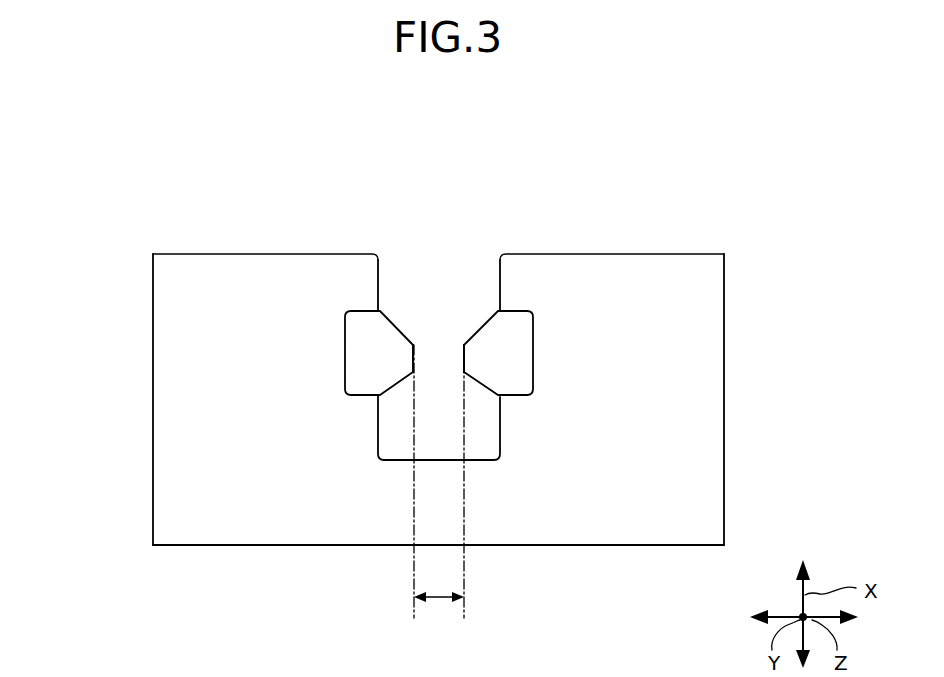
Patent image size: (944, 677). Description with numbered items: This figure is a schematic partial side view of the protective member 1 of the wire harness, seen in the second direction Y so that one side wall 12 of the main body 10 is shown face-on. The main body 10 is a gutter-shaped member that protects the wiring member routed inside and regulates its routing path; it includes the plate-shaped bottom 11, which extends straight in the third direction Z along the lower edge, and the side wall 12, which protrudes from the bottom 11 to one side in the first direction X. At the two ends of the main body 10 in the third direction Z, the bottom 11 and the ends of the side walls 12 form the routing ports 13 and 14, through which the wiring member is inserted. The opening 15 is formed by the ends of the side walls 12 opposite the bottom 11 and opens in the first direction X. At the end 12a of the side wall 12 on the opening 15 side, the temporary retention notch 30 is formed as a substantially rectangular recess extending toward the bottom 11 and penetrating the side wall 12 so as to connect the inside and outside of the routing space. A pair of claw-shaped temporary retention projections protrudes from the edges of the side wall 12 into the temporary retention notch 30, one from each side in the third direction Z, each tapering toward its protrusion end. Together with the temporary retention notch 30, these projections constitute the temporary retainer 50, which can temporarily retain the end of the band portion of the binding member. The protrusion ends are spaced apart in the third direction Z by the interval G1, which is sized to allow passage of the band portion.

The protective member 1 is at (203, 185).
The main body 10 is at (90, 363).
The bottom 11 is at (582, 548).
The side wall 12 is at (660, 258).
The end of the side wall 12a is at (308, 252).
The routing port 13 is at (735, 428).
The routing port 14 is at (145, 426).
The opening 15 is at (575, 252).
The temporary retention notch 30 is at (400, 446).
The temporary retainer 50 is at (452, 187).
The interval G1 is at (440, 602).